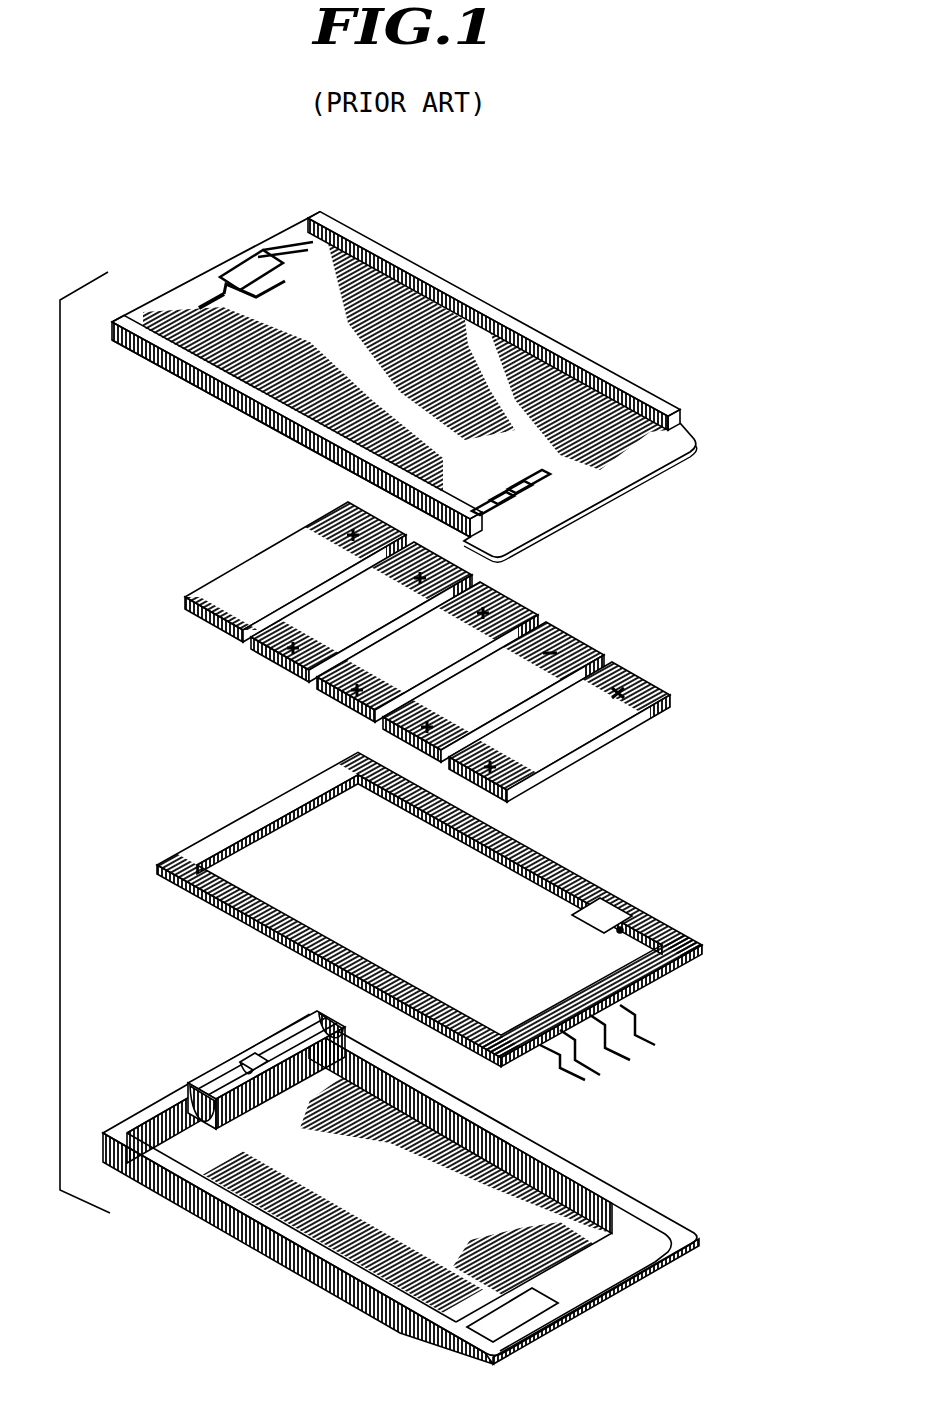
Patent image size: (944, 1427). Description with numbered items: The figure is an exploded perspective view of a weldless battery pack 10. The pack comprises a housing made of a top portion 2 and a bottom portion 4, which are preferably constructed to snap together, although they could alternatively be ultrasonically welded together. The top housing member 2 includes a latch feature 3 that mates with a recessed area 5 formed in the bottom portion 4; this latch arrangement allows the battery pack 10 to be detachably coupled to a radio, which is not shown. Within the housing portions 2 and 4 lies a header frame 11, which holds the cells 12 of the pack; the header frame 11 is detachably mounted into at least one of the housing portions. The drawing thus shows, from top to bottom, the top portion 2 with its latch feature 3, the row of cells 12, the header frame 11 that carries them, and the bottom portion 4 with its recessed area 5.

The battery pack 10 is at (606, 228).
The top portion 2 is at (385, 305).
The latch feature 3 is at (242, 281).
The cells 12 is at (637, 708).
The header frame 11 is at (683, 940).
The bottom portion 4 is at (323, 1228).
The recessed area 5 is at (223, 1097).